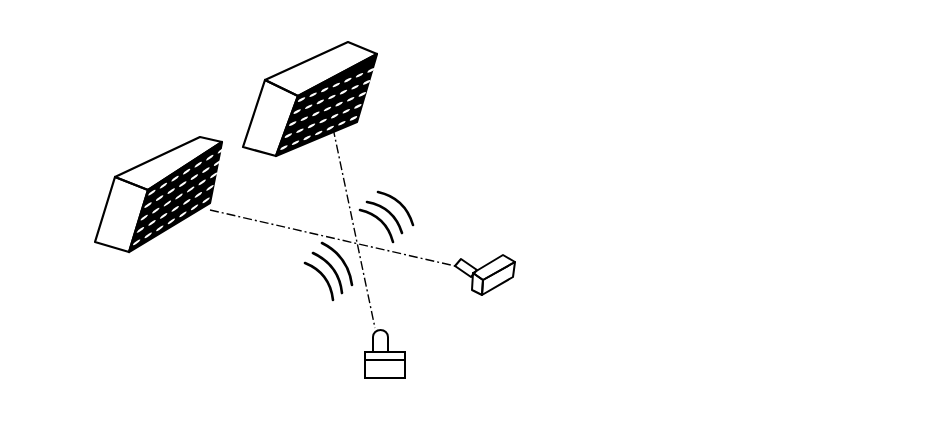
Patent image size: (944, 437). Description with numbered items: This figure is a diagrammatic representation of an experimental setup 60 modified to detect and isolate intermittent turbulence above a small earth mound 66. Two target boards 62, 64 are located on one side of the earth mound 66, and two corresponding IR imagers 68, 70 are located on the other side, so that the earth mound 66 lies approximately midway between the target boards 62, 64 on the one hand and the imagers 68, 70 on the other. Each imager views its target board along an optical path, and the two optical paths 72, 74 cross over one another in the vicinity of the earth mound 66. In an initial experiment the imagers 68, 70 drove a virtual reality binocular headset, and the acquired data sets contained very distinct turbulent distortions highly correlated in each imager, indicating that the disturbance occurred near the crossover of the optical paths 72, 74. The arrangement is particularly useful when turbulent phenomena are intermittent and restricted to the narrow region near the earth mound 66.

The experimental setup 60 is at (547, 120).
The target board 62 is at (303, 58).
The target board 64 is at (155, 152).
The earth mound 66 is at (408, 208).
The IR imager 68 is at (412, 365).
The IR imager 70 is at (520, 263).
The optical path 72 is at (368, 307).
The optical path 74 is at (433, 260).